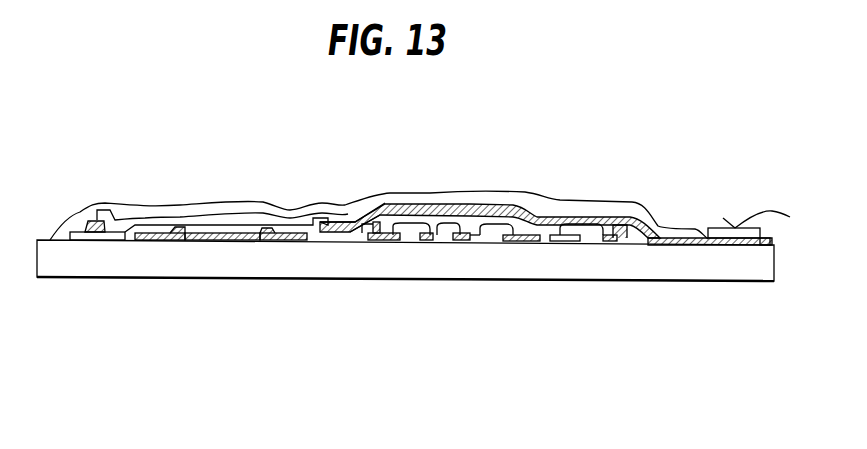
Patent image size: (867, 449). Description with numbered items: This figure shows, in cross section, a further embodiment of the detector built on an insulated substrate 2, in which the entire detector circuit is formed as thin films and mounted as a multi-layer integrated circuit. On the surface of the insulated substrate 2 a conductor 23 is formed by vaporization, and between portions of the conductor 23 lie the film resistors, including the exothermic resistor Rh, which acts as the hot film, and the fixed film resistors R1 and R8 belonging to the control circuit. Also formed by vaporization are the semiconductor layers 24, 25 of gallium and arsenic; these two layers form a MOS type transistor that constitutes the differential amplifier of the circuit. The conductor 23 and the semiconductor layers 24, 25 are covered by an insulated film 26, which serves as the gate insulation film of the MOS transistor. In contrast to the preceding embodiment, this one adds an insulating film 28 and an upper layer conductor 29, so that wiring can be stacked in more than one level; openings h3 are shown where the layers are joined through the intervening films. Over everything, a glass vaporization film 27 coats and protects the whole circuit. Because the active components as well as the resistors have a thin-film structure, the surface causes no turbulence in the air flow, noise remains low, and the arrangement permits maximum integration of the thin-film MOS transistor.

The insulated substrate 2 is at (202, 260).
The conductor 23 is at (150, 241).
The semiconductor layer 24 is at (410, 242).
The semiconductor layer 25 is at (433, 243).
The insulated film 26 is at (455, 225).
The glass vaporization film 27 is at (150, 205).
The insulating film 28 is at (80, 240).
The upper layer conductor 29 is at (92, 222).
The fixed film resistor R1 is at (270, 218).
The exothermic resistor Rh is at (250, 241).
The fixed film resistor R8 is at (620, 243).
The contact hole h3 is at (370, 222).